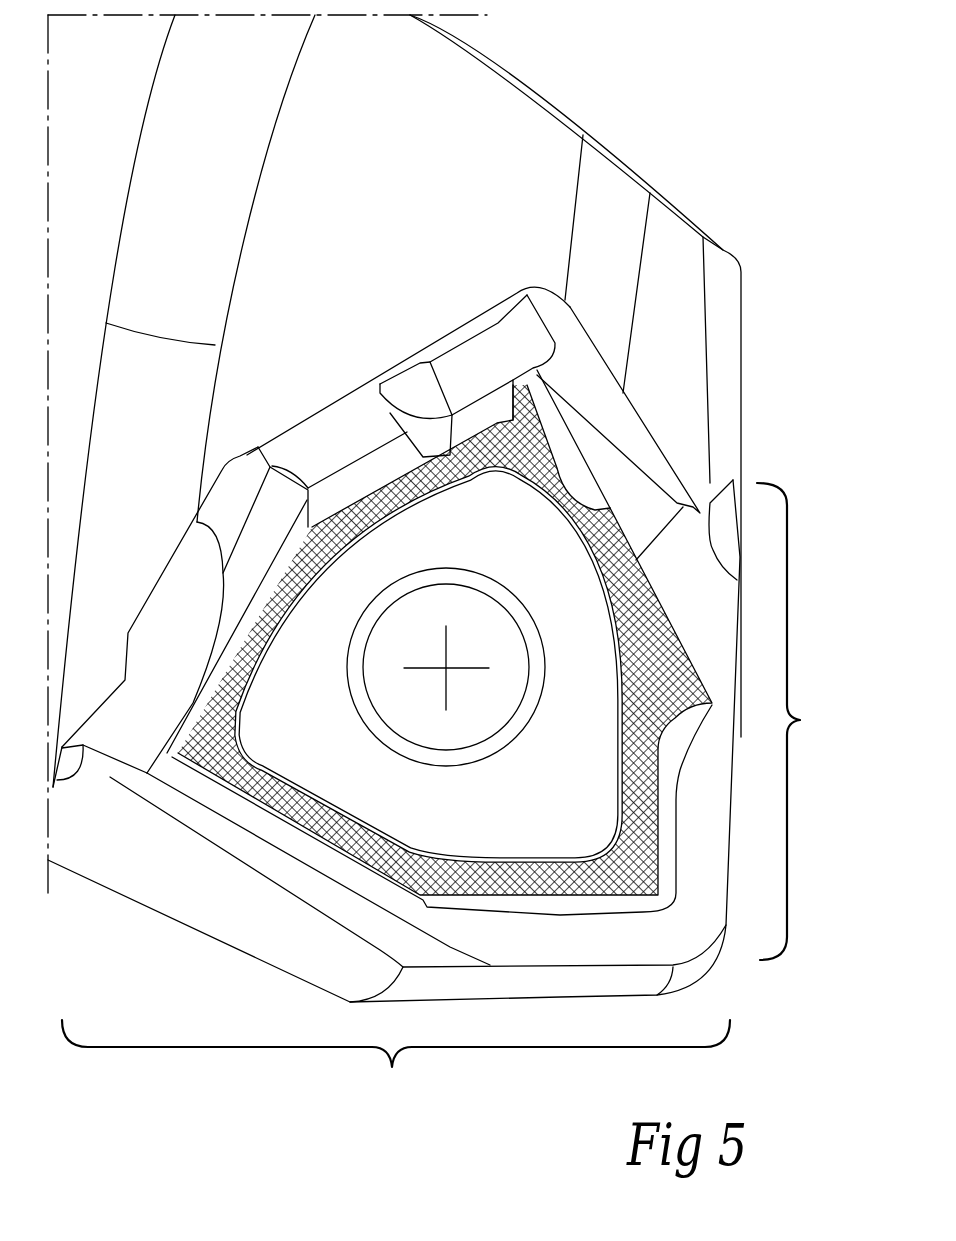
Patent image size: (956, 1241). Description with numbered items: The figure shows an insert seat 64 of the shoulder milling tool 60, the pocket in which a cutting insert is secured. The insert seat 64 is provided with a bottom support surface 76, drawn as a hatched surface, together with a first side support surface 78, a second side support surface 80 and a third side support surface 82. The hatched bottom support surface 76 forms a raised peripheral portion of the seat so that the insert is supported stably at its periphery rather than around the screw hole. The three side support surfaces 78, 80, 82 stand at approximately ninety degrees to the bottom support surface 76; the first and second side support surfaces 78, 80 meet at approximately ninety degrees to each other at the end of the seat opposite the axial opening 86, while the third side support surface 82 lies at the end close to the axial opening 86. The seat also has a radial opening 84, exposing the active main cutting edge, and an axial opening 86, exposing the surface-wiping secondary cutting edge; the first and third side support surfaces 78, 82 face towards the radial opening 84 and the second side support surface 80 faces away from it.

The shoulder milling tool 60 is at (677, 152).
The insert seat 64 is at (266, 835).
The bottom support surface 76 is at (667, 688).
The first side support surface 78 is at (461, 357).
The second side support surface 80 is at (655, 475).
The third side support surface 82 is at (126, 690).
The radial opening 84 is at (803, 721).
The axial opening 86 is at (396, 1063).